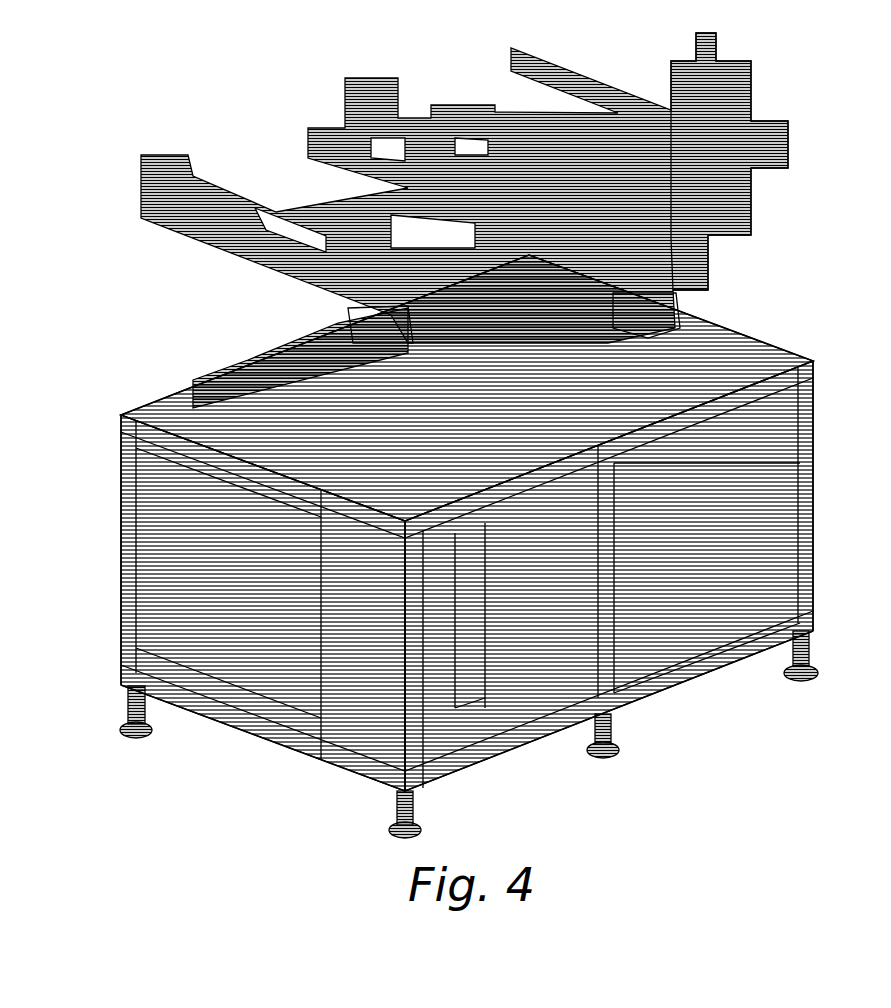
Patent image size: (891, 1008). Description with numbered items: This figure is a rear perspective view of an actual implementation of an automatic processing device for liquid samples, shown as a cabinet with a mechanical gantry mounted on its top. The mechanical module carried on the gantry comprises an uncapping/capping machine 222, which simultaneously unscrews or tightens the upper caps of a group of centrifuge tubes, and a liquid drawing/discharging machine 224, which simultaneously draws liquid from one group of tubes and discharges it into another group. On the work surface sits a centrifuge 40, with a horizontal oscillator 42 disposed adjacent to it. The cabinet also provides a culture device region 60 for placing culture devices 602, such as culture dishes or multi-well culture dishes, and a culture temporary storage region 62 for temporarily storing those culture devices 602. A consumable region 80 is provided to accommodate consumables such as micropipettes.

The centrifuge 40 is at (680, 307).
The horizontal oscillator 42 is at (807, 397).
The culture device region 60 is at (807, 542).
The culture temporary storage region 62 is at (807, 595).
The consumable region 80 is at (113, 539).
The uncapping/capping machine 222 is at (747, 200).
The liquid drawing/discharging machine 224 is at (367, 307).
The culture devices 602 is at (807, 480).